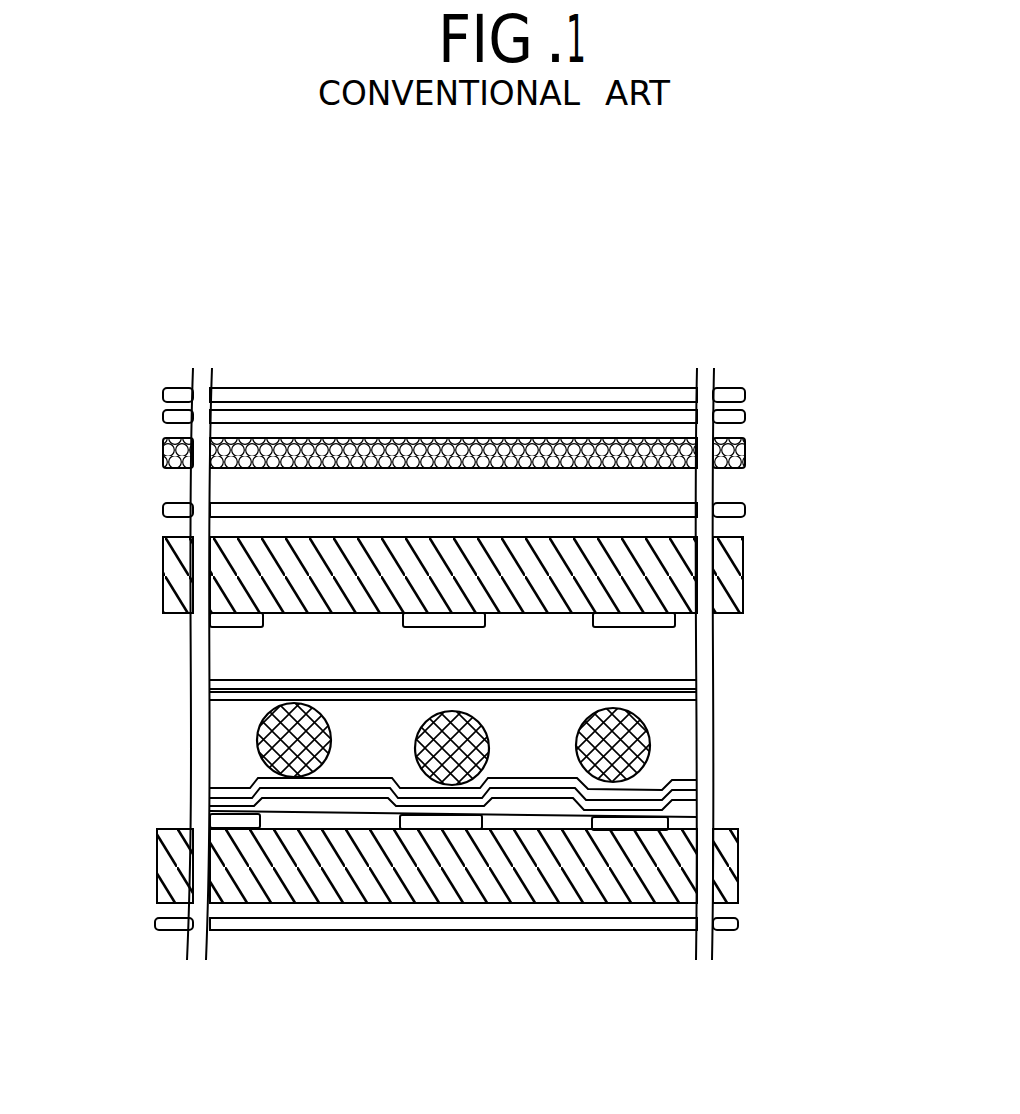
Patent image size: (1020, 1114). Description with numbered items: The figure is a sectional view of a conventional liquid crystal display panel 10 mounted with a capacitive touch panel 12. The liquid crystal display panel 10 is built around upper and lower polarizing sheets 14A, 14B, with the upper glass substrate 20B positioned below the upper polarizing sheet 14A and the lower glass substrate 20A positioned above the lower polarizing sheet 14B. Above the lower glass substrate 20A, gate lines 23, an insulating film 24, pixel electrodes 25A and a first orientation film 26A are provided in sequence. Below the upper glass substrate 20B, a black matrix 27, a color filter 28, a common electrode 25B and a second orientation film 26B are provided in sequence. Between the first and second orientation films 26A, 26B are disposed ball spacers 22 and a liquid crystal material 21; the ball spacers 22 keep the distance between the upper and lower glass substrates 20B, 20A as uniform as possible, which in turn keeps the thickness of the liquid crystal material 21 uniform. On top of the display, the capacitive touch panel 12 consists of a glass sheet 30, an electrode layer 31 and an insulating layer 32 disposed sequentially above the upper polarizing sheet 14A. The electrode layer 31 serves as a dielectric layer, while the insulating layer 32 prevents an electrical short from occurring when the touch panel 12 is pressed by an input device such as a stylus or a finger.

The liquid crystal display panel 10 is at (112, 763).
The capacitive touch panel 12 is at (118, 419).
The upper polarizing sheet 14A is at (745, 510).
The lower polarizing sheet 14B is at (738, 923).
The lower glass substrate 20A is at (738, 866).
The upper glass substrate 20B is at (743, 573).
The liquid crystal material 21 is at (688, 738).
The ball spacers 22 is at (257, 738).
The gate lines 23 is at (693, 818).
The insulating film 24 is at (697, 808).
The pixel electrodes 25A is at (697, 797).
The common electrode 25B is at (680, 684).
The first orientation film 26A is at (700, 777).
The second orientation film 26B is at (680, 699).
The black matrix 27 is at (675, 619).
The color filter 28 is at (680, 657).
The glass sheet 30 is at (745, 456).
The electrode layer 31 is at (745, 420).
The insulating layer 32 is at (745, 395).